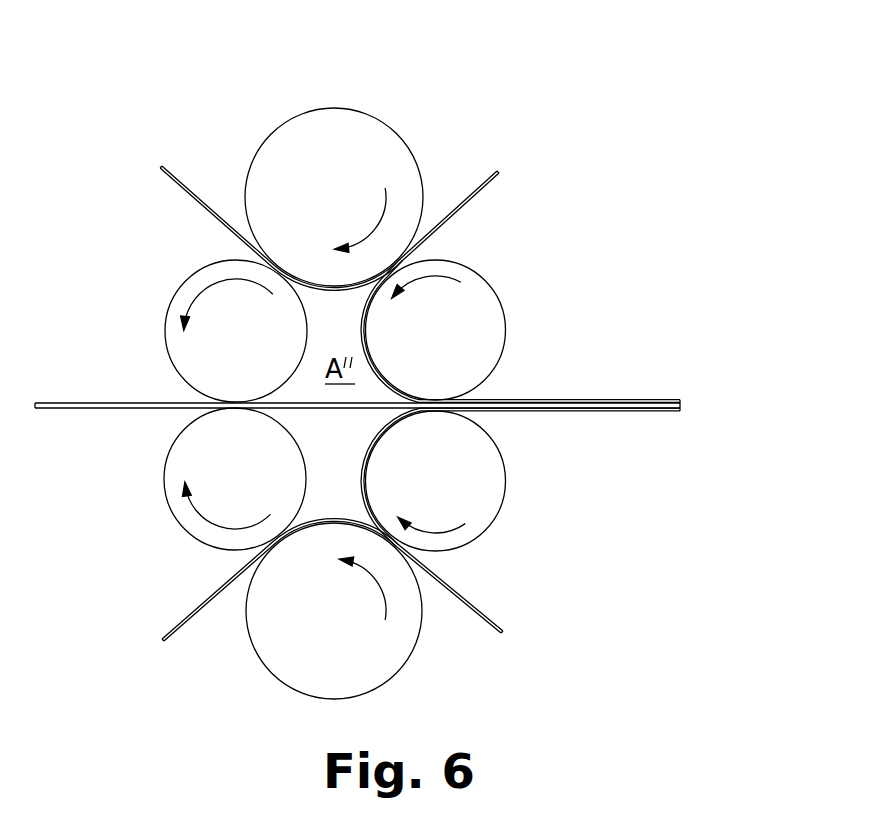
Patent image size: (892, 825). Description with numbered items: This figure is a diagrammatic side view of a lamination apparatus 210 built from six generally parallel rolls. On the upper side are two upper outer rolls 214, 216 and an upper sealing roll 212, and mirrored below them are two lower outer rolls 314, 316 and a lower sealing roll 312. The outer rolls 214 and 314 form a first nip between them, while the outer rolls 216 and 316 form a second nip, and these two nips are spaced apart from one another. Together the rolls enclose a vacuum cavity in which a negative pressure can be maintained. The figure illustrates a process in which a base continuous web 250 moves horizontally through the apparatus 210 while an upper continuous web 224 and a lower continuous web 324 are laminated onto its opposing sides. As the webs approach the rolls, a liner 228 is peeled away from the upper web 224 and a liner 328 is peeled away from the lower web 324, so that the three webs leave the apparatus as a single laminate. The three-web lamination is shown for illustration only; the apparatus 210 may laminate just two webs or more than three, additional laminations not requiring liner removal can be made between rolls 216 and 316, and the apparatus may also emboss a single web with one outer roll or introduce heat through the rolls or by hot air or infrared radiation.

The lamination apparatus 210 is at (449, 106).
The upper sealing roll 212 is at (499, 296).
The upper outer roll 214 is at (323, 109).
The upper outer roll 216 is at (167, 312).
The upper continuous web 224 is at (488, 186).
The liner 228 is at (168, 167).
The base continuous web 250 is at (71, 410).
The lower sealing roll 312 is at (499, 511).
The lower outer roll 314 is at (372, 682).
The lower outer roll 316 is at (189, 535).
The lower continuous web 324 is at (478, 607).
The liner 328 is at (487, 629).